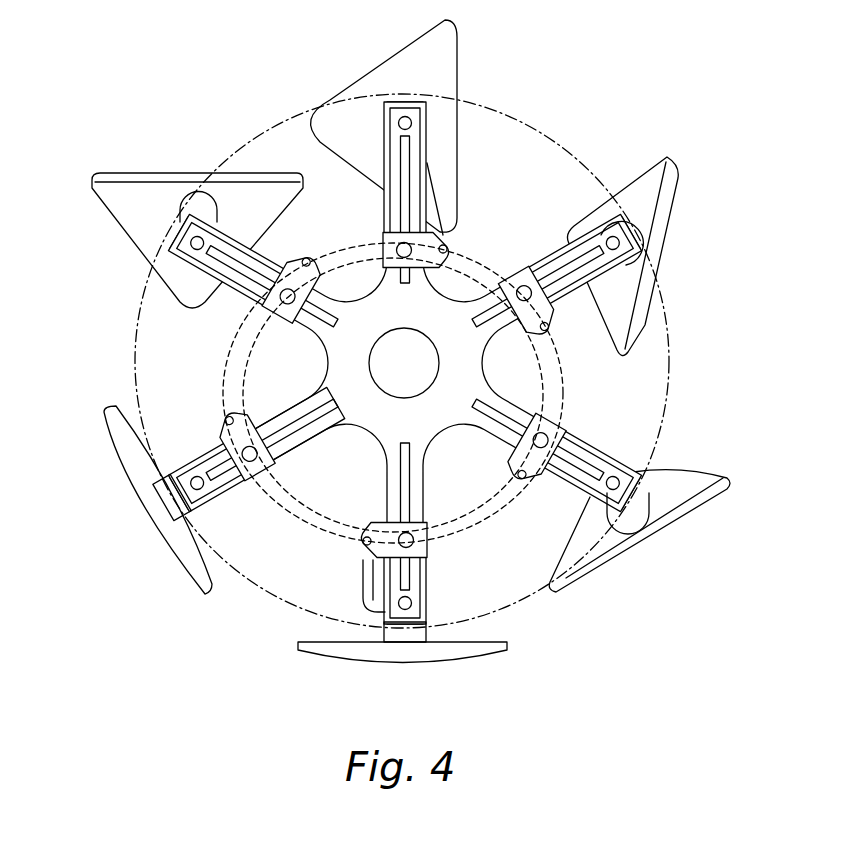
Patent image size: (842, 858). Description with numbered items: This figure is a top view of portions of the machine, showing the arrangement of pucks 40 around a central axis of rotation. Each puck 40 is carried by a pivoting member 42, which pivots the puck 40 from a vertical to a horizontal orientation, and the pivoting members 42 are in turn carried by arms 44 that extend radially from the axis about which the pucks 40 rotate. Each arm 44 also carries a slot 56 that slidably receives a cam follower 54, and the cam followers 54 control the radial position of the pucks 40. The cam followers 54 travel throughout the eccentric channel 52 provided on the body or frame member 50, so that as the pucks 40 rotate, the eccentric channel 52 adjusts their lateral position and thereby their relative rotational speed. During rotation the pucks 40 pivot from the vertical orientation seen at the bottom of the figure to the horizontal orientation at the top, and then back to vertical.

The puck 40 is at (128, 498).
The pivoting member 42 is at (177, 445).
The arm 44 is at (285, 405).
The frame member 50 is at (264, 133).
The eccentric cam slot 52 is at (478, 252).
The cam follower 54 is at (248, 462).
The slot 56 is at (308, 425).